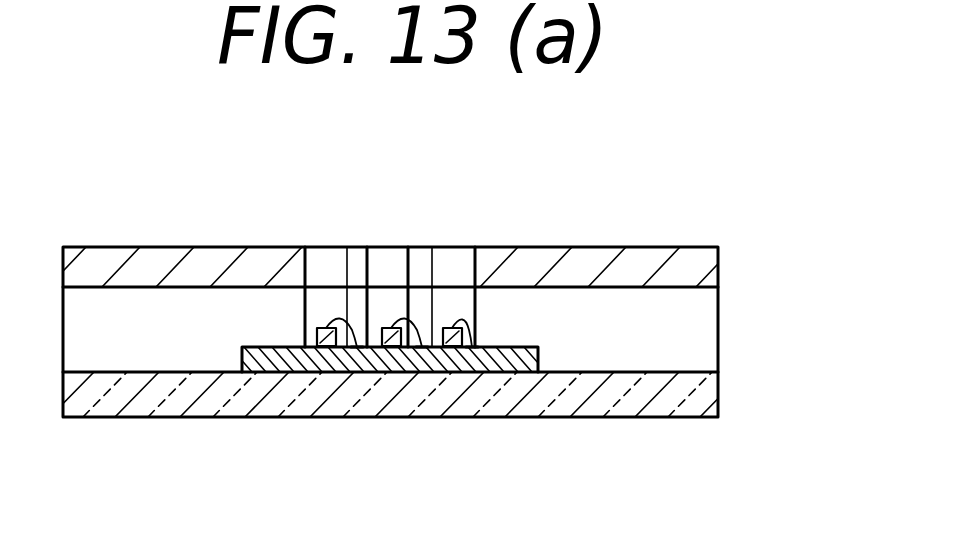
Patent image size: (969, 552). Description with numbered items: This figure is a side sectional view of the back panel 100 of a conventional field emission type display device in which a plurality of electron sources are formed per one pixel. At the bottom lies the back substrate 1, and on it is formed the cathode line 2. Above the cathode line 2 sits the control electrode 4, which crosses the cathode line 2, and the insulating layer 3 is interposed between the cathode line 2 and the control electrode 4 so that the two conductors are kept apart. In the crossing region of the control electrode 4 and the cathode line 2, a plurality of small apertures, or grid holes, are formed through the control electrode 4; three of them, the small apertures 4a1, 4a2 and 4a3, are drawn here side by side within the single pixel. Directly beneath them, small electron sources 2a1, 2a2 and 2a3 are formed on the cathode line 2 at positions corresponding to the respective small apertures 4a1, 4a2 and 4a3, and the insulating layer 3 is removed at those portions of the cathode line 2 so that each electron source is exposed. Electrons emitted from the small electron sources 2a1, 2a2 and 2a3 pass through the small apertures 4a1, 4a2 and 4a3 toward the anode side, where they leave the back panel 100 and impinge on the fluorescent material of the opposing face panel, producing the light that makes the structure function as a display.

The back panel 100 is at (121, 228).
The back substrate 1 is at (590, 408).
The cathode line 2 is at (262, 372).
The small electron source 2a1 is at (355, 347).
The small electron source 2a2 is at (422, 347).
The small electron source 2a3 is at (472, 347).
The insulating layer 3 is at (357, 302).
The control electrode 4 is at (588, 258).
The small aperture 4a1 is at (325, 247).
The small aperture 4a2 is at (390, 247).
The small aperture 4a3 is at (448, 247).